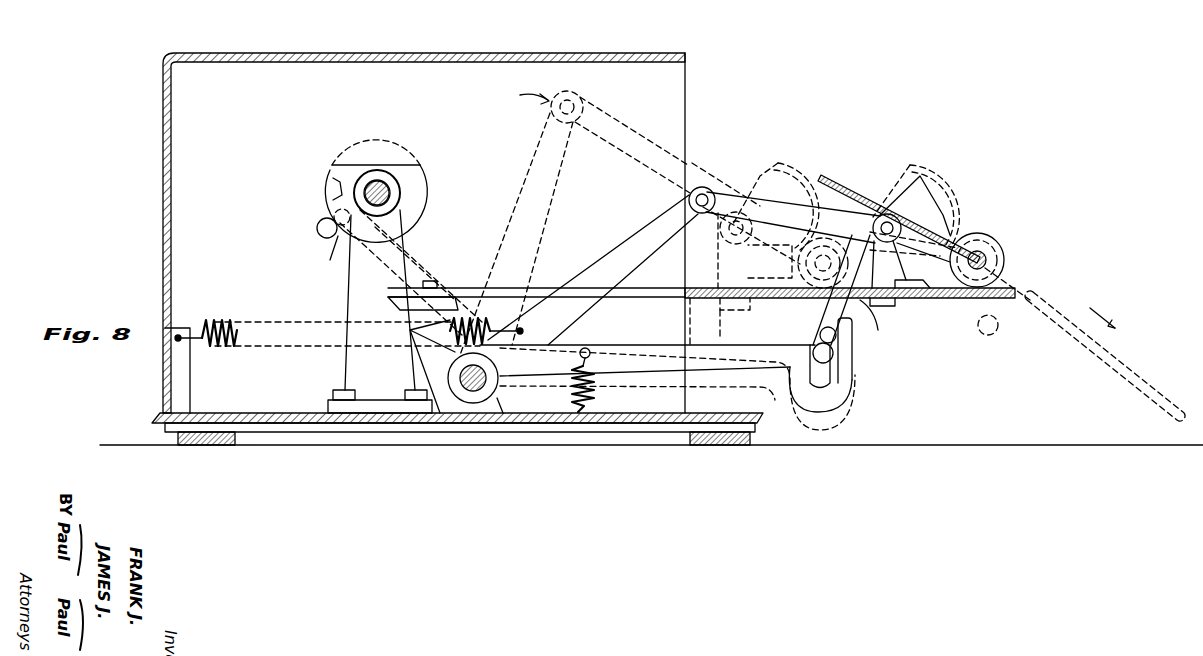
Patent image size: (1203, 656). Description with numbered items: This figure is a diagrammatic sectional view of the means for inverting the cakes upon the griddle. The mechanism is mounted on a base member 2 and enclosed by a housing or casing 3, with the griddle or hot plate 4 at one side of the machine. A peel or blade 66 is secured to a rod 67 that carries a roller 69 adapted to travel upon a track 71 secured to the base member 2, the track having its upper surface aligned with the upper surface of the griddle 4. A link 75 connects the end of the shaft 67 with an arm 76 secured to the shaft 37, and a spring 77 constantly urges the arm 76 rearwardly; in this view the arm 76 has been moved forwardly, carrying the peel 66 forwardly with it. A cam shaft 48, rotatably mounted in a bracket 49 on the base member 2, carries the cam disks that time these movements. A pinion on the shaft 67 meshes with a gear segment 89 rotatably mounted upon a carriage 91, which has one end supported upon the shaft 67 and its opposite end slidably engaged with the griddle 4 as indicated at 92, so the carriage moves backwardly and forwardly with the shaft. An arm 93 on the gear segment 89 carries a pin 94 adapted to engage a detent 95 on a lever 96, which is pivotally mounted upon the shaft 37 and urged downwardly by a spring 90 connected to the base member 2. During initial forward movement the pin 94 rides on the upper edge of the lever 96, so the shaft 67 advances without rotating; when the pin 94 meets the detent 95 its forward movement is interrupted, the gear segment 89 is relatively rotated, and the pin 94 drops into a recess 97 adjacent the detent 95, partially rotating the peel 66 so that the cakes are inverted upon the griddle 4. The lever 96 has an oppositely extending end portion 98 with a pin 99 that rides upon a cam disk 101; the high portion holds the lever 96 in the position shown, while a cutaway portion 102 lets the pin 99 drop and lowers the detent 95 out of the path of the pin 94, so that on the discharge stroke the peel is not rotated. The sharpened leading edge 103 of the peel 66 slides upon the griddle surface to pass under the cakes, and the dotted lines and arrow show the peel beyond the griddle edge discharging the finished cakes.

The base member 2 is at (305, 424).
The housing or casing 3 is at (163, 176).
The griddle or hot plate 4 is at (935, 300).
The shaft 37 is at (473, 390).
The cam shaft 48 is at (380, 190).
The bracket 49 is at (360, 348).
The peel or blade 66 is at (832, 186).
The rod 67 is at (987, 254).
The roller 69 is at (826, 238).
The track 71 is at (656, 298).
The link 75 is at (692, 163).
The arm 76 is at (612, 262).
The spring 77 is at (222, 350).
The gear segment 89 is at (775, 150).
The spring 90 is at (574, 388).
The carriage 91 is at (942, 240).
The sliding engagement 92 is at (724, 310).
The arm 93 is at (790, 313).
The pin 94 is at (846, 366).
The detent 95 is at (838, 348).
The lever 96 is at (637, 373).
The recess 97 is at (820, 380).
The oppositely extending end portion 98 is at (338, 265).
The pin 99 is at (320, 235).
The cam disk 101 is at (345, 145).
The cutaway portion 102 is at (378, 160).
The leading edge 103 is at (828, 177).